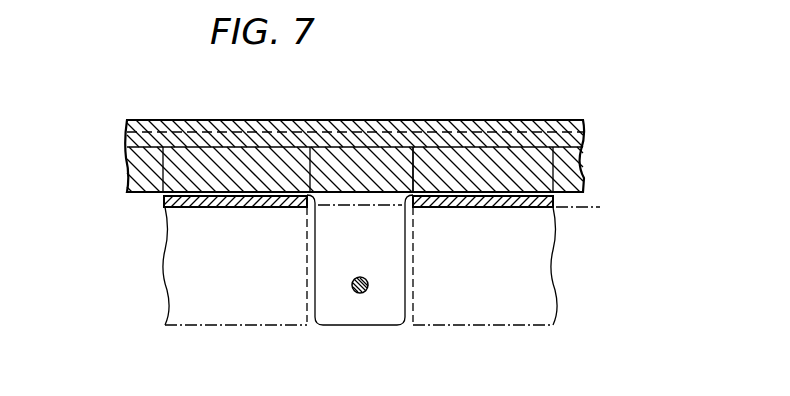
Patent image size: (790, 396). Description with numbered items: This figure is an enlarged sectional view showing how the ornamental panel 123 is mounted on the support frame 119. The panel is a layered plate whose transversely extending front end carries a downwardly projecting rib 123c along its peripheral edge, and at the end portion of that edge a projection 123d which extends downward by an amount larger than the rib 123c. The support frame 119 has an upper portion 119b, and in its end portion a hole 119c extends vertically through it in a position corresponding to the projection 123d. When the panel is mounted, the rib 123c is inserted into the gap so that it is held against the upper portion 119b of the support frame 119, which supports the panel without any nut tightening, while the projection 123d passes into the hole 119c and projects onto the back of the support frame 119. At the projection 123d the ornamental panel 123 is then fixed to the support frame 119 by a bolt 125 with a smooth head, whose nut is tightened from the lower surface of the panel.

The support frame 119 is at (160, 259).
The upper portion of the support frame 119b is at (190, 173).
The hole 119c is at (411, 160).
The ornamental panel 123 is at (510, 121).
The rib 123c is at (584, 163).
The projection 123d is at (387, 315).
The bolt 125 is at (358, 293).